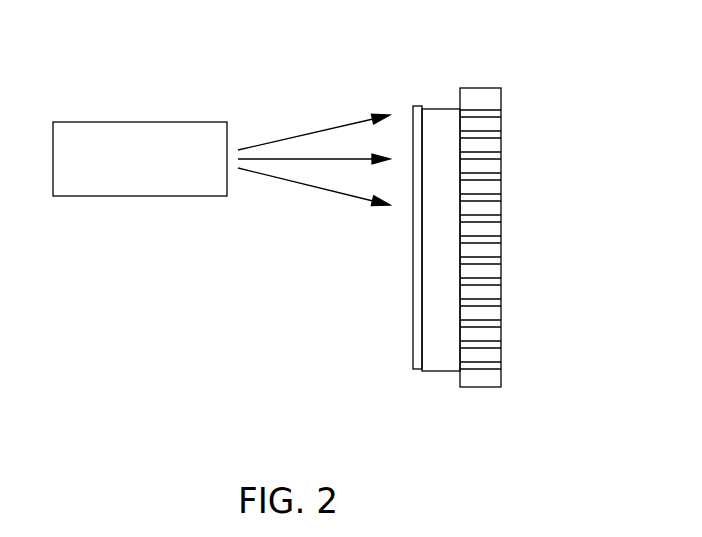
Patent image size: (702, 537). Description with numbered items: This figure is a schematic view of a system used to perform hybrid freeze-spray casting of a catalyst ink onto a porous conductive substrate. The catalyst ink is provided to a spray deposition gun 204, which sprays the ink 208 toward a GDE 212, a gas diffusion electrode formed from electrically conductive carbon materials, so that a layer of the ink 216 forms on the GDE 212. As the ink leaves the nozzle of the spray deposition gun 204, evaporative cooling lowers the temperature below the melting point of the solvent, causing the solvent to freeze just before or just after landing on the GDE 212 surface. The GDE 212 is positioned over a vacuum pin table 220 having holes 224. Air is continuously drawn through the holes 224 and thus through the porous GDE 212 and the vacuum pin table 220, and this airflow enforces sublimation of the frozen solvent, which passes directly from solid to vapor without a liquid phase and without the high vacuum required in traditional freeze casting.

The spray deposition gun 204 is at (140, 159).
The ink 208 is at (270, 140).
The GDE 212 is at (430, 109).
The layer of the ink 216 is at (411, 113).
The vacuum pin table 220 is at (491, 89).
The holes 224 is at (501, 285).